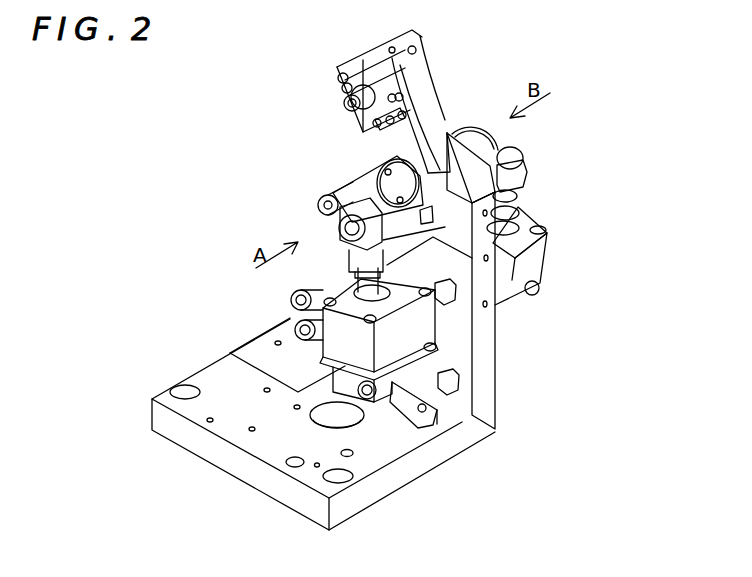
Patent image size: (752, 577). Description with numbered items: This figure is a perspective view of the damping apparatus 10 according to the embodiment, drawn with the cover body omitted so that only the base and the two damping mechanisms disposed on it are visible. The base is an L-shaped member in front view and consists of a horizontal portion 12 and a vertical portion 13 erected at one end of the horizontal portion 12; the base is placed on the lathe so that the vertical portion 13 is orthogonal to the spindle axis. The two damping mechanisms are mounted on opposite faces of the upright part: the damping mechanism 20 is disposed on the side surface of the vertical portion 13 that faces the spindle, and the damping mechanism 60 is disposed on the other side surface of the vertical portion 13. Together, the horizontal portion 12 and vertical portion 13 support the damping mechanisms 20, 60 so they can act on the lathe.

The damping apparatus 10 is at (221, 193).
The horizontal portion 12 is at (413, 467).
The vertical portion 13 is at (490, 378).
The damping mechanism 20 is at (442, 335).
The damping mechanism 60 is at (535, 200).